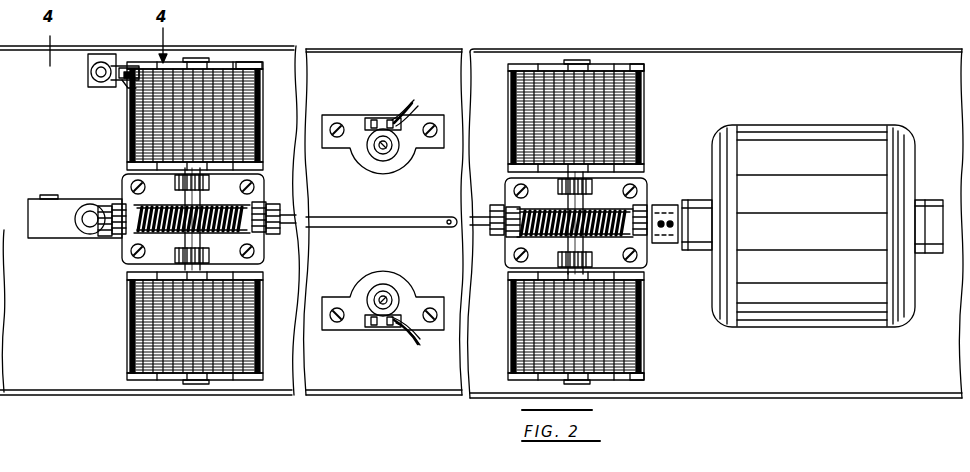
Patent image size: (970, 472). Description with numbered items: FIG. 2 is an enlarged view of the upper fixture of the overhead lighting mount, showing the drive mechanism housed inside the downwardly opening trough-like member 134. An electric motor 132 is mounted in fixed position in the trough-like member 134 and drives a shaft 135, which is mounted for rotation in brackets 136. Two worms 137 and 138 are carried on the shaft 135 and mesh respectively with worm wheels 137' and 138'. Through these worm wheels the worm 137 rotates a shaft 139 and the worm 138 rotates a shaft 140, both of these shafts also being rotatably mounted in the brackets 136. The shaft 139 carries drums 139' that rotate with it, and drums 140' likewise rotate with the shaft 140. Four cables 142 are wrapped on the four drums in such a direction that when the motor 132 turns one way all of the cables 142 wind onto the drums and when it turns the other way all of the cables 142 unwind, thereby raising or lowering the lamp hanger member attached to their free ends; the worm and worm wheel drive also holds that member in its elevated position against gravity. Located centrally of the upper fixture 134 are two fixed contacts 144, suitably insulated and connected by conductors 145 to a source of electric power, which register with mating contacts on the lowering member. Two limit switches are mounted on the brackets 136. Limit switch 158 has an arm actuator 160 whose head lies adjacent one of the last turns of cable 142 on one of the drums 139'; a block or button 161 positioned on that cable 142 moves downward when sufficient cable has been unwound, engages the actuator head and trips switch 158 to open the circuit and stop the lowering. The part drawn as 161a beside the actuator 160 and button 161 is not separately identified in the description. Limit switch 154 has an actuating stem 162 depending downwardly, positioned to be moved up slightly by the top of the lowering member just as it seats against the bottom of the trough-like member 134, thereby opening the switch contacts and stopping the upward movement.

The electric motor 132 is at (812, 226).
The trough-like member 134 is at (852, 51).
The shaft 135 is at (348, 216).
The brackets 136 is at (124, 264).
The worm 137 is at (214, 237).
The worm wheel 137' is at (167, 261).
The worm 138 is at (494, 204).
The worm wheel 138' is at (607, 246).
The shaft 139 is at (234, 193).
The drums 139' is at (232, 164).
The shaft 140 is at (627, 201).
The drums 140' is at (664, 222).
The cables 142 is at (258, 136).
The fixed contacts 144 is at (388, 158).
The conductors 145 is at (412, 102).
The limit switch 154 is at (52, 232).
The limit switch 158 is at (103, 90).
The arm actuator 160 is at (113, 64).
The block or button 161 is at (142, 72).
The contact arm 161a is at (124, 90).
The actuating stem 162 is at (92, 224).